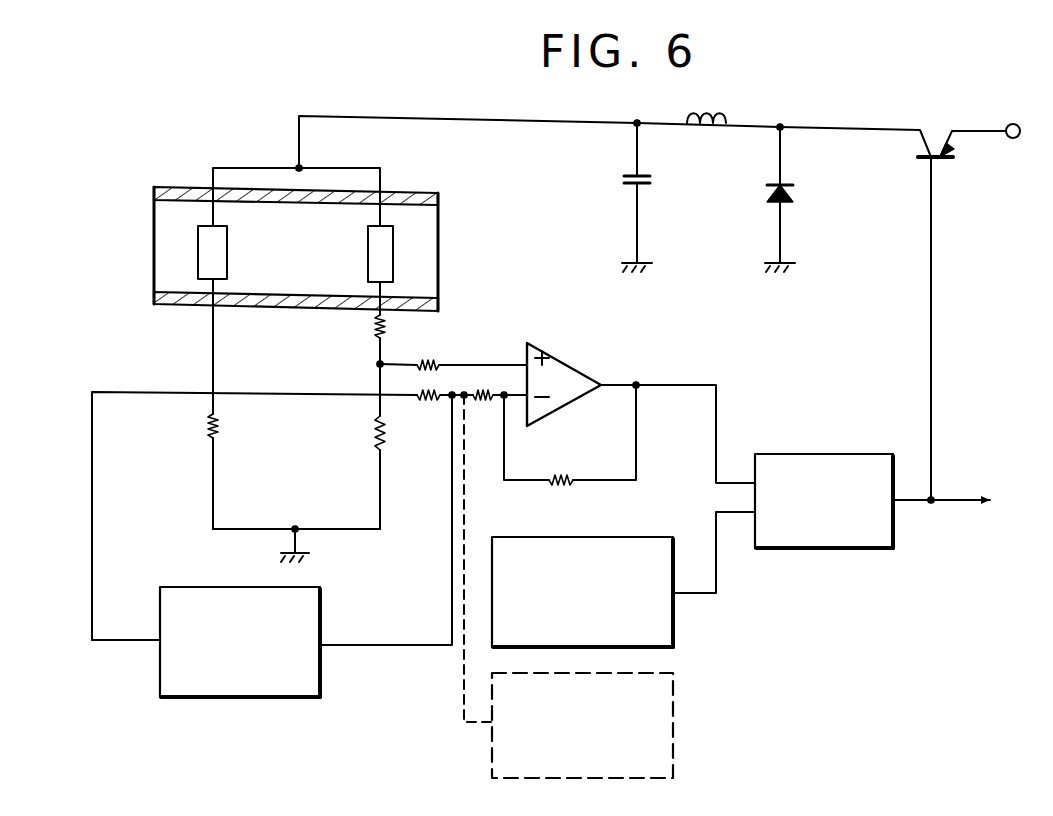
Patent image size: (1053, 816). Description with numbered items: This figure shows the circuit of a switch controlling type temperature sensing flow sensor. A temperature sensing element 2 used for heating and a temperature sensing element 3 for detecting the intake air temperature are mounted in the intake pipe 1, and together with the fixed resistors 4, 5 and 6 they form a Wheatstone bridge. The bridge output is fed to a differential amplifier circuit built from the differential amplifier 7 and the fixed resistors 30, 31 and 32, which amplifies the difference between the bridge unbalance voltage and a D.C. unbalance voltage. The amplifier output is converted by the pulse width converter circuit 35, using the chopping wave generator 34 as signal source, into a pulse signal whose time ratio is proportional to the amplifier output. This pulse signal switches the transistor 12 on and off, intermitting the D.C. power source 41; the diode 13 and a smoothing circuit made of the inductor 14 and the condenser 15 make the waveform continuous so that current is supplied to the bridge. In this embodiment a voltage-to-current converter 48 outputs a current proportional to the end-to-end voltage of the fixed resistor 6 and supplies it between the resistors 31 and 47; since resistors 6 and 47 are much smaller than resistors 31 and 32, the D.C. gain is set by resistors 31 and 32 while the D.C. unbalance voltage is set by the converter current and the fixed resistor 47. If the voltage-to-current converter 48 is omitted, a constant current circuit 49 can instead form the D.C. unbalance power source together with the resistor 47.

The intake pipe 1 is at (388, 190).
The temperature sensing element 2 is at (198, 250).
The temperature sensing element 3 is at (395, 253).
The fixed resistor 4 is at (376, 326).
The fixed resistor 5 is at (375, 436).
The fixed resistor 6 is at (218, 426).
The differential amplifier 7 is at (556, 355).
The switching transistor 12 is at (942, 160).
The diode 13 is at (793, 185).
The inductor 14 is at (712, 117).
The condenser 15 is at (652, 180).
The fixed resistor 30 is at (428, 358).
The fixed resistor 31 is at (483, 402).
The fixed resistor 32 is at (561, 487).
The chopping wave generator 34 is at (673, 615).
The pulse width converter circuit 35 is at (817, 548).
The D.C. power source 41 is at (1013, 124).
The fixed resistor 47 is at (428, 402).
The voltage-to-current converter 48 is at (235, 697).
The constant current circuit 49 is at (673, 710).